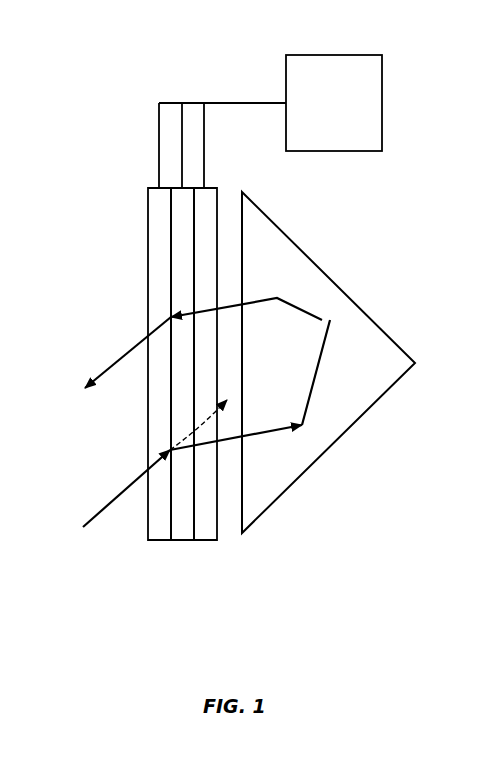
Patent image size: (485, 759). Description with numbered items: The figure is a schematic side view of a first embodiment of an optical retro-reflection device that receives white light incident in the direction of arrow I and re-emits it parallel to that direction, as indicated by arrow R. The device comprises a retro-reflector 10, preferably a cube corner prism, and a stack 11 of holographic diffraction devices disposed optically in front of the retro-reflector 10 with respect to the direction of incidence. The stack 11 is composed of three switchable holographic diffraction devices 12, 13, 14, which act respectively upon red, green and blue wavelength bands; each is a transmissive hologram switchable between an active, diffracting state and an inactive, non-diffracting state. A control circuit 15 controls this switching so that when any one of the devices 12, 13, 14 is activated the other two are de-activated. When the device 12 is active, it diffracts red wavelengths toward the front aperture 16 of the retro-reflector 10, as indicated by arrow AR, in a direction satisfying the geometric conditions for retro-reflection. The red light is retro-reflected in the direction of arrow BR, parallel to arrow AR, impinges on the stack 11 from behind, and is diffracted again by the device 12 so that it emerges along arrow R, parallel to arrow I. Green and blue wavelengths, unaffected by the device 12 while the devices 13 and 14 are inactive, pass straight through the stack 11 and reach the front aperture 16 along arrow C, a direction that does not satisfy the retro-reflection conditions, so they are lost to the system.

The retro-reflector 10 is at (365, 425).
The stack of holographic diffraction devices 11 is at (184, 424).
The switchable holographic diffraction device 12 is at (158, 540).
The switchable holographic diffraction device 13 is at (182, 540).
The switchable holographic diffraction device 14 is at (227, 386).
The control circuit 15 is at (332, 55).
The front aperture 16 is at (240, 245).
The arrow R is at (140, 342).
The arrow B_R BR is at (233, 305).
The arrow A_R AR is at (248, 437).
The arrow C is at (227, 400).
The arrow I is at (138, 475).